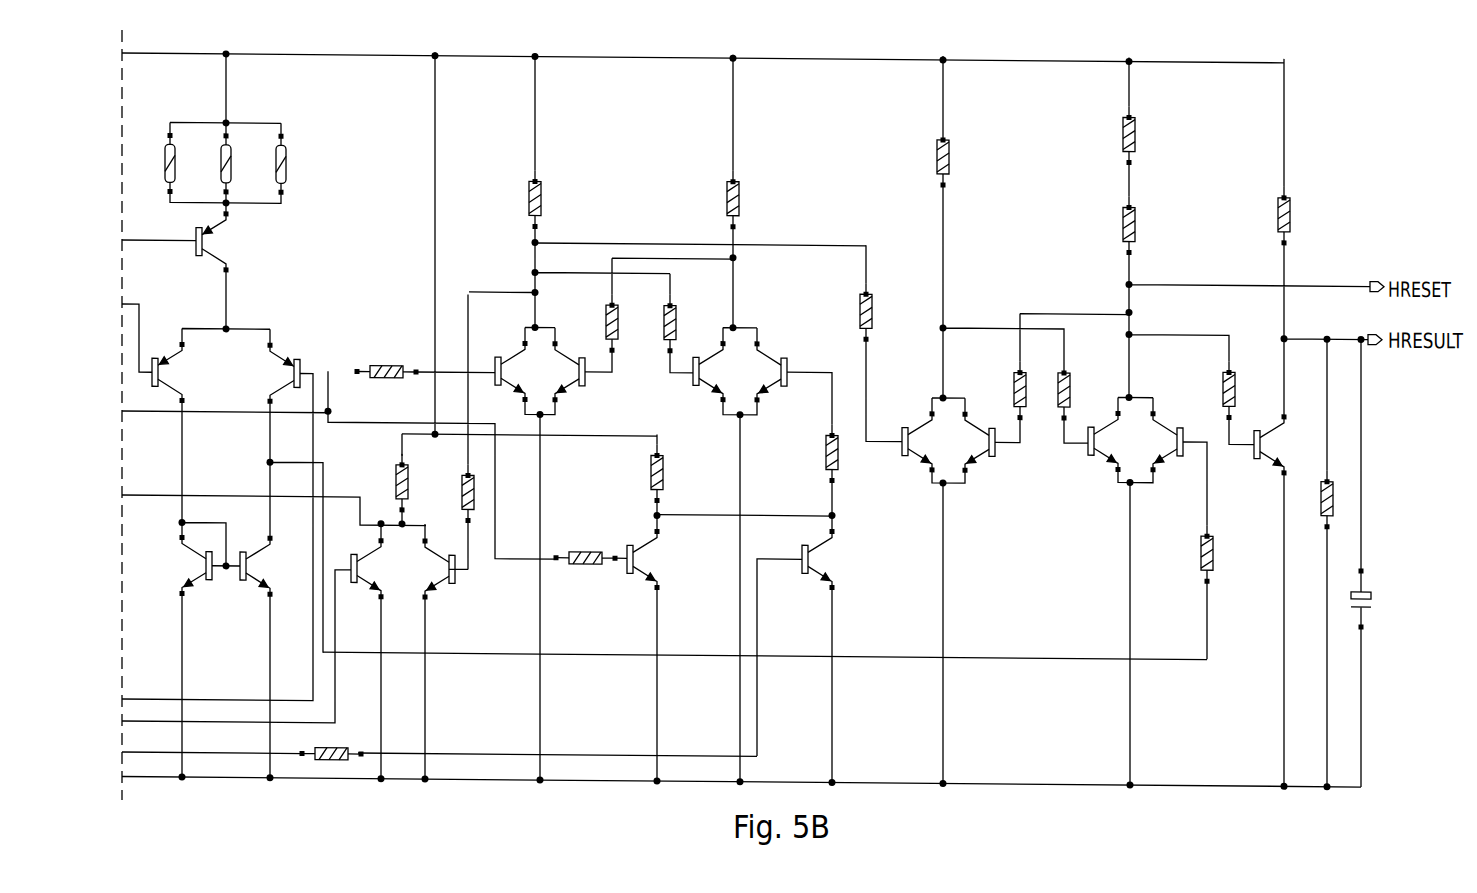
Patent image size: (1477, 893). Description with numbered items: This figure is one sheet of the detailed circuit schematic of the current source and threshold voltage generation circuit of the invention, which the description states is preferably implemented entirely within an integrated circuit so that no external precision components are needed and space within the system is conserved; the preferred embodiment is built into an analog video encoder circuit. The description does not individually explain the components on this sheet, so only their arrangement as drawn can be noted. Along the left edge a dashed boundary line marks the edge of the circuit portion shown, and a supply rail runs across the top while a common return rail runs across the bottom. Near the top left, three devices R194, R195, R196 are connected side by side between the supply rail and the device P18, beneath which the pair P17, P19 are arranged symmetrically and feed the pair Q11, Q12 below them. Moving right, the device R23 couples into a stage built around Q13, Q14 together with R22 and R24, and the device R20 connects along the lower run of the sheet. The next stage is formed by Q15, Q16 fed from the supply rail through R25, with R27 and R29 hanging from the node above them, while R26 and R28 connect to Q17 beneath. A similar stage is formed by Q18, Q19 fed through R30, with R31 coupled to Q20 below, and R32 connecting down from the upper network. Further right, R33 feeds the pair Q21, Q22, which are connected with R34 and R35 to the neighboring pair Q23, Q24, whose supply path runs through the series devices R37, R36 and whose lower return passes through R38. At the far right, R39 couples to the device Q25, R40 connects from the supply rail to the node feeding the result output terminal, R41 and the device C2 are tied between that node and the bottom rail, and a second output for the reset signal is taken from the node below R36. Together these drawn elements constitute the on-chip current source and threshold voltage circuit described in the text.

The resistor R194 is at (191, 168).
The resistor R195 is at (247, 168).
The resistor R196 is at (303, 169).
The PNP transistor P18 is at (207, 238).
The PNP transistor P17 is at (164, 369).
The PNP transistor P19 is at (288, 370).
The transistor Q11 is at (200, 561).
The transistor Q12 is at (252, 562).
The transistor Q13 is at (363, 563).
The transistor Q14 is at (442, 564).
The transistor Q15 is at (506, 369).
The transistor Q16 is at (575, 370).
The transistor Q17 is at (637, 556).
The transistor Q18 is at (704, 369).
The transistor Q19 is at (776, 370).
The transistor Q20 is at (813, 556).
The transistor Q21 is at (912, 438).
The transistor Q22 is at (983, 438).
The transistor Q23 is at (1099, 437).
The transistor Q24 is at (1171, 440).
The transistor Q25 is at (1264, 442).
The resistor R20 is at (332, 744).
The resistor R22 is at (385, 483).
The resistor R23 is at (387, 360).
The resistor R24 is at (452, 493).
The resistor R25 is at (517, 199).
The resistor R26 is at (586, 546).
The resistor R27 is at (595, 323).
The resistor R28 is at (638, 473).
The resistor R29 is at (651, 323).
The resistor R30 is at (715, 199).
The resistor R31 is at (815, 453).
The resistor R32 is at (847, 312).
The resistor R33 is at (924, 158).
The resistor R34 is at (1001, 390).
The resistor R35 is at (1080, 391).
The resistor R36 is at (1110, 225).
The resistor R37 is at (1110, 135).
The resistor R38 is at (1189, 554).
The resistor R39 is at (1210, 390).
The resistor R40 is at (1266, 216).
The resistor R41 is at (1310, 499).
The capacitor C2 is at (1374, 598).